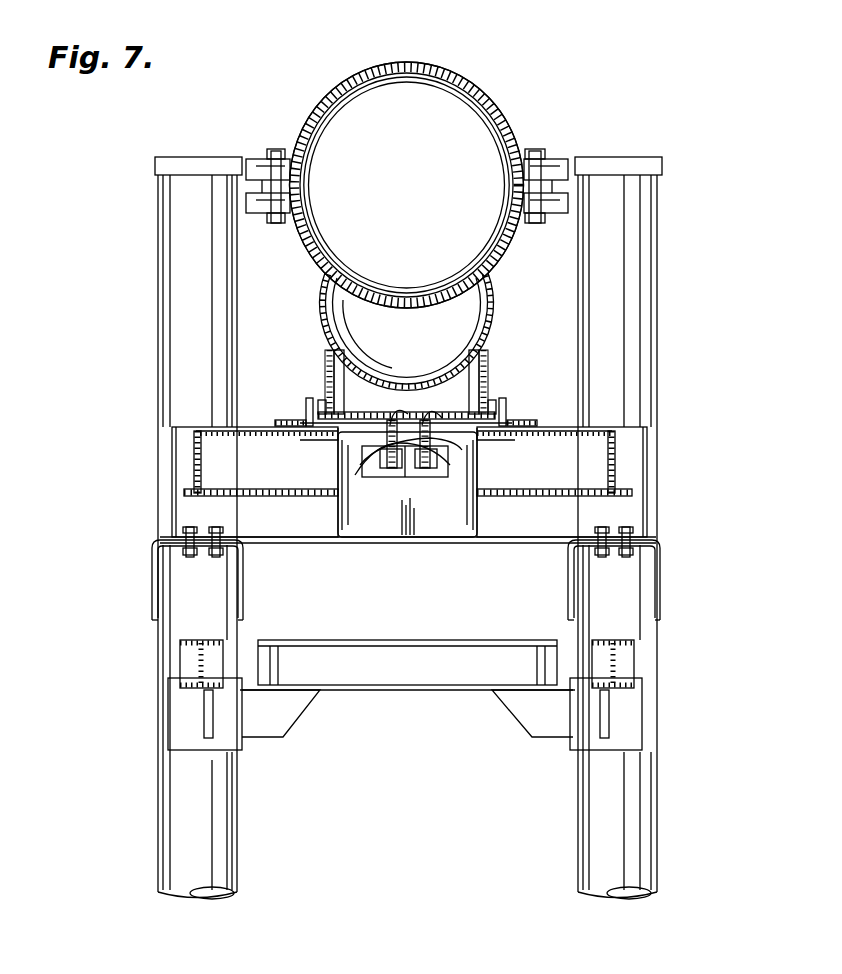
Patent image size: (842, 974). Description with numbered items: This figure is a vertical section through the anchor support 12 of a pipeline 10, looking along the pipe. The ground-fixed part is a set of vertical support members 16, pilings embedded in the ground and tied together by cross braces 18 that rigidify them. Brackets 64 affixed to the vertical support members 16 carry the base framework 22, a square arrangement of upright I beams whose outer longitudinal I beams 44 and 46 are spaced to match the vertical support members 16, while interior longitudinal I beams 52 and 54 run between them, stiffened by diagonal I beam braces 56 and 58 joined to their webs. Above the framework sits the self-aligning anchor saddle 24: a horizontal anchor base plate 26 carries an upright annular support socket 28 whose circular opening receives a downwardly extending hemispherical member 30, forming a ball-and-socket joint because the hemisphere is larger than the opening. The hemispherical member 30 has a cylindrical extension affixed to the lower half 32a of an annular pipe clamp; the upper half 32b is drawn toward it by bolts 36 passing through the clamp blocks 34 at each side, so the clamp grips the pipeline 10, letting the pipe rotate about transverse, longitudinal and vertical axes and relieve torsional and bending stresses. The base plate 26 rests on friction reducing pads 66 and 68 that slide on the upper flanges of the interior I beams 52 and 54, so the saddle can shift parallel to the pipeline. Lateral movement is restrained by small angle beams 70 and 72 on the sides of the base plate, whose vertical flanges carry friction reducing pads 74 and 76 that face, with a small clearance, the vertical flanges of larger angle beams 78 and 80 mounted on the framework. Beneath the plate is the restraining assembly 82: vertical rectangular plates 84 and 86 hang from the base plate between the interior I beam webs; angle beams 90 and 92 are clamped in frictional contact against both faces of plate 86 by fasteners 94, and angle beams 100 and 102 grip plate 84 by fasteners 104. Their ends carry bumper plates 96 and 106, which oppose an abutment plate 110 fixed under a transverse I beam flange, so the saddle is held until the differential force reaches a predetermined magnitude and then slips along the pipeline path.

The pipeline 10 is at (482, 104).
The anchor support 12 is at (672, 320).
The vertical support members 16 is at (178, 238).
The cross braces 18 is at (392, 690).
The base framework 22 is at (489, 508).
The anchor saddle 24 is at (487, 348).
The anchor base plate 26 is at (466, 392).
The support socket 28 is at (336, 405).
The hemispherical member 30 is at (324, 298).
The lower half of pipe clamp 32a is at (505, 257).
The upper half of pipe clamp 32b is at (450, 80).
The clamp block 34 is at (252, 200).
The bolts 36 is at (276, 149).
The longitudinally oriented I beam 44 is at (196, 466).
The longitudinally oriented I beam 46 is at (618, 476).
The interior longitudinally oriented I beam 52 is at (335, 512).
The interior longitudinally oriented I beam 54 is at (470, 540).
The I beam brace 56 is at (572, 483).
The I beam brace 58 is at (249, 480).
The brackets 64 is at (150, 570).
The friction reducing pad 66 is at (316, 434).
The friction reducing pad 68 is at (495, 440).
The angle beam 70 is at (321, 400).
The angle beam 72 is at (489, 402).
The friction reducing pad 74 is at (308, 400).
The friction reducing pad 76 is at (506, 412).
The angle beam 78 is at (292, 421).
The angle beam 80 is at (528, 418).
The restraining assembly 82 is at (418, 495).
The rectangular plate 84 is at (345, 450).
The rectangular plate 86 is at (480, 456).
The angle beam 90 is at (428, 440).
The angle beam 92 is at (458, 452).
The fasteners 94 is at (395, 440).
The bumper plate 96 is at (426, 472).
The angle beam 100 is at (364, 475).
The angle beam 102 is at (408, 476).
The fasteners 104 is at (382, 470).
The bumper plate 106 is at (388, 472).
The abutment plate 110 is at (366, 462).